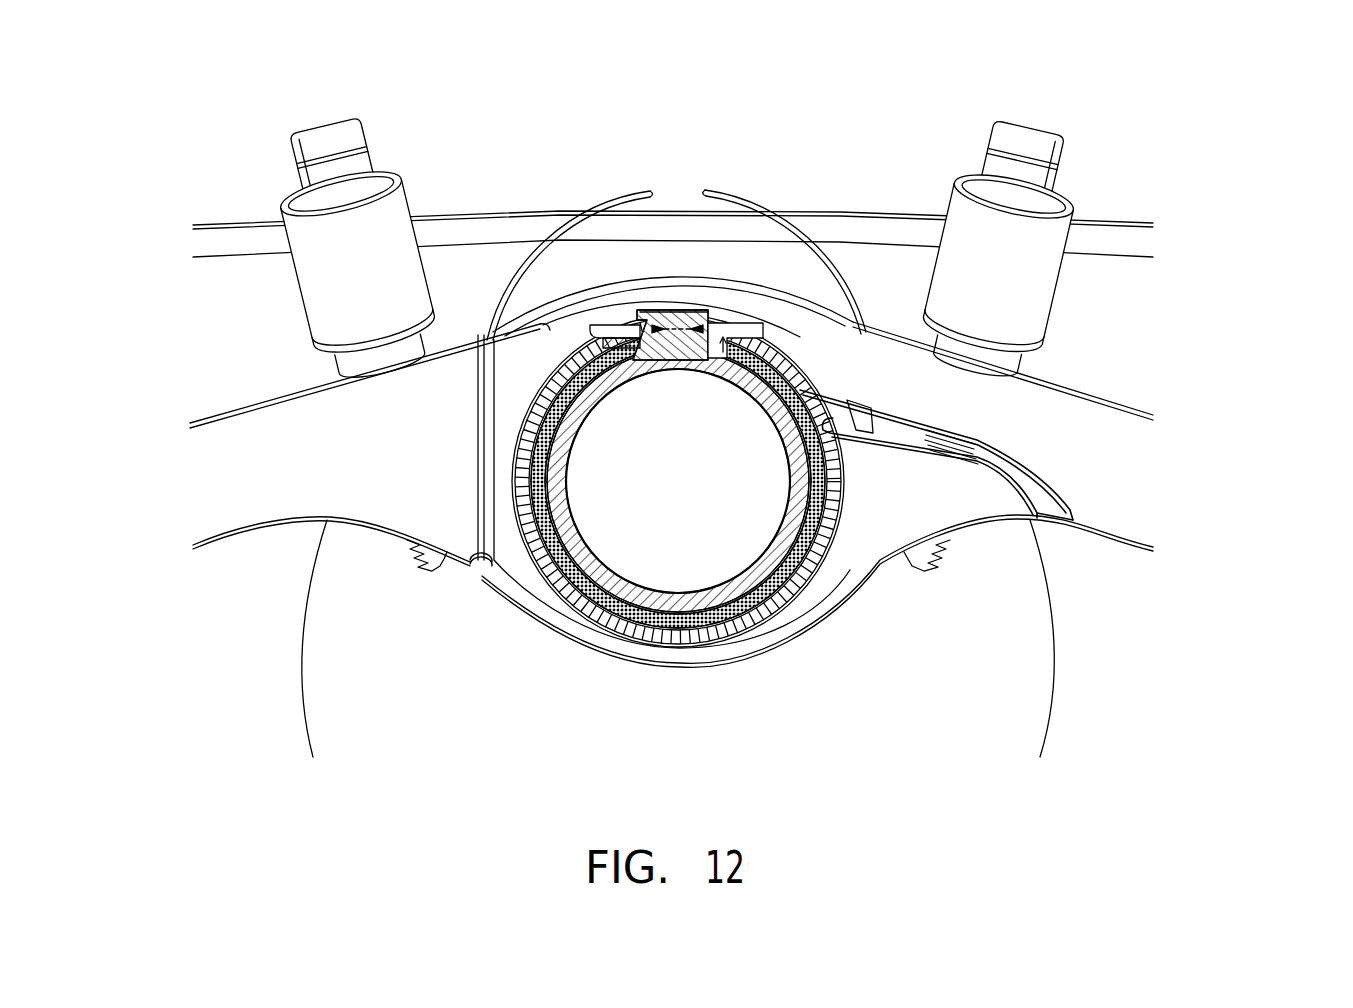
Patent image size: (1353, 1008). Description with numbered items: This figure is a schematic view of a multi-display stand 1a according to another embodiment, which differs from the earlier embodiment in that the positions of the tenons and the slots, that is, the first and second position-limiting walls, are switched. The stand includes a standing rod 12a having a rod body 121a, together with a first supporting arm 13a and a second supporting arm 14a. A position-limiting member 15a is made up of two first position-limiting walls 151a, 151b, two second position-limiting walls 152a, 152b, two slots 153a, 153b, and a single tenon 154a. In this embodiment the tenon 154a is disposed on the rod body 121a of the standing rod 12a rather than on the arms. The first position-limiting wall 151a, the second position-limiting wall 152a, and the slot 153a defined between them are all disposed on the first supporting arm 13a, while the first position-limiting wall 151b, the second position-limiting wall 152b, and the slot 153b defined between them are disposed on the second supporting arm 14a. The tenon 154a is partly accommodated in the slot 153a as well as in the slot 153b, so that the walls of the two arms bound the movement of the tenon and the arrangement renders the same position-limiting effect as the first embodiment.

The multi-display stand 1a is at (425, 92).
The standing rod 12a is at (673, 636).
The rod body 121a is at (585, 597).
The first supporting arm 13a is at (1128, 380).
The second supporting arm 14a is at (208, 382).
The position-limiting member 15a is at (888, 382).
The first position-limiting wall 151a is at (738, 335).
The first position-limiting wall 151b is at (600, 320).
The second position-limiting wall 152a is at (683, 320).
The second position-limiting wall 152b is at (703, 320).
The slot 153a is at (725, 355).
The slot 153b is at (603, 316).
The tenon 154a is at (690, 332).